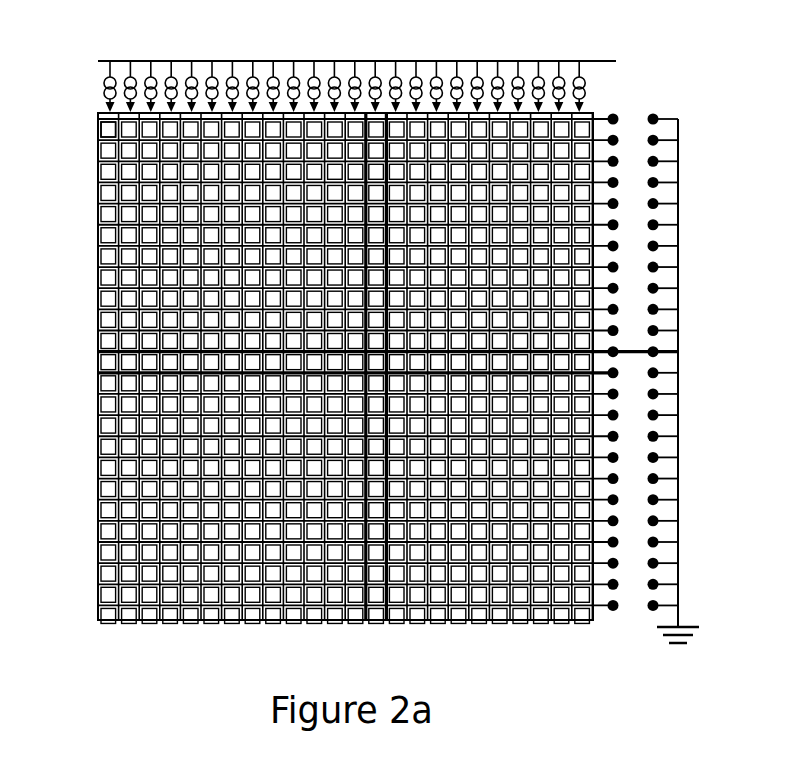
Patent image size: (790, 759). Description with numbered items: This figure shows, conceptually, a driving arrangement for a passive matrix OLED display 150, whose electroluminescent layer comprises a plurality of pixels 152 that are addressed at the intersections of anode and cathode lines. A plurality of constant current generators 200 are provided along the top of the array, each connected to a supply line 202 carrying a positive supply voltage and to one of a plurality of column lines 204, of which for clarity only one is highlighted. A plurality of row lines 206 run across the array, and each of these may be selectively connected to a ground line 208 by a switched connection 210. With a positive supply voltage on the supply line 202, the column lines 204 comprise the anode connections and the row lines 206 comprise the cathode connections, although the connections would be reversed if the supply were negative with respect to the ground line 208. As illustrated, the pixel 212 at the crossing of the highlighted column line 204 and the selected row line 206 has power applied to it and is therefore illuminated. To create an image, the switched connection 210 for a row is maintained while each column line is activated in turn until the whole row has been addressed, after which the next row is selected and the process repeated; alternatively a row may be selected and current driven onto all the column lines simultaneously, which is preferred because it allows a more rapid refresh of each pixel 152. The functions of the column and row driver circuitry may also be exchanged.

The passive matrix OLED display 150 is at (92, 566).
The pixel 152 is at (100, 123).
The constant current generator 200 is at (379, 76).
The supply line 202 is at (598, 56).
The column line 204 is at (388, 117).
The row line 206 is at (112, 371).
The ground line 208 is at (679, 214).
The switched connection 210 is at (630, 350).
The pixel 212 is at (370, 353).